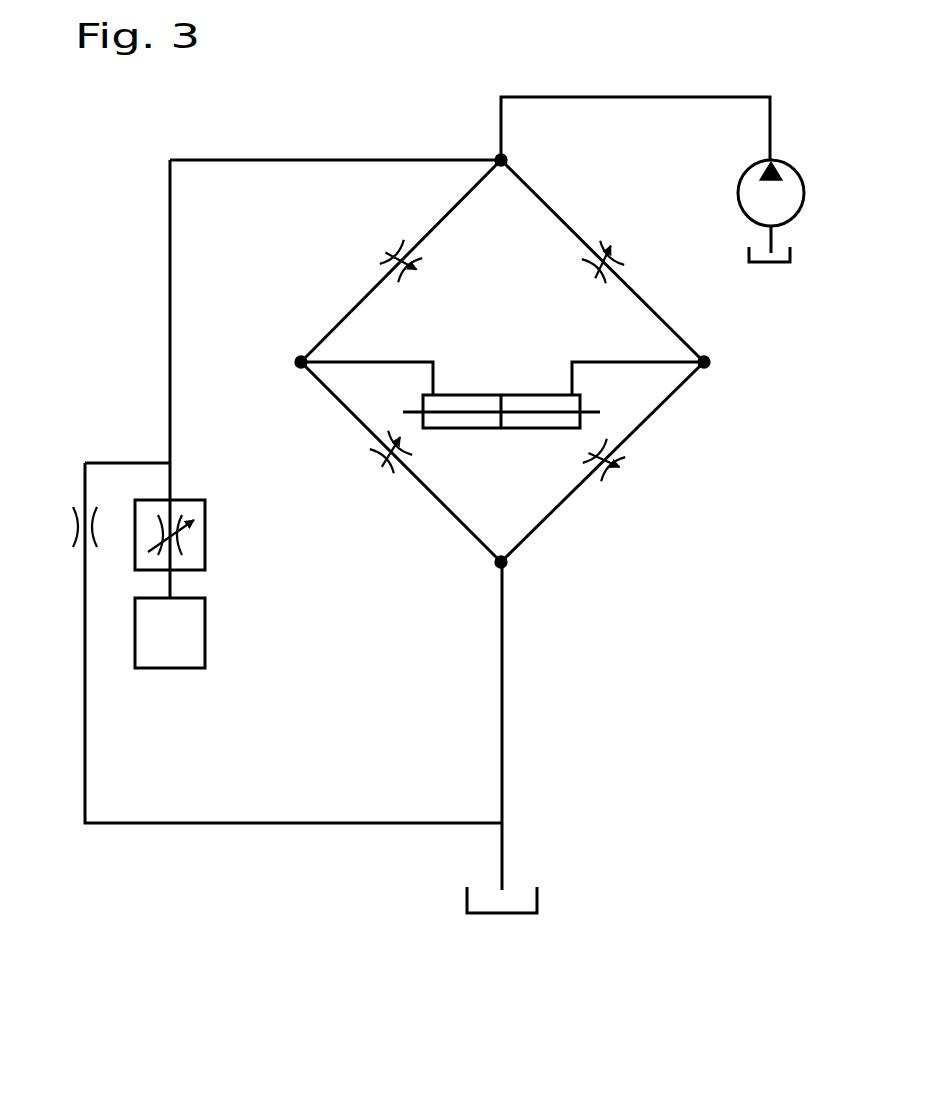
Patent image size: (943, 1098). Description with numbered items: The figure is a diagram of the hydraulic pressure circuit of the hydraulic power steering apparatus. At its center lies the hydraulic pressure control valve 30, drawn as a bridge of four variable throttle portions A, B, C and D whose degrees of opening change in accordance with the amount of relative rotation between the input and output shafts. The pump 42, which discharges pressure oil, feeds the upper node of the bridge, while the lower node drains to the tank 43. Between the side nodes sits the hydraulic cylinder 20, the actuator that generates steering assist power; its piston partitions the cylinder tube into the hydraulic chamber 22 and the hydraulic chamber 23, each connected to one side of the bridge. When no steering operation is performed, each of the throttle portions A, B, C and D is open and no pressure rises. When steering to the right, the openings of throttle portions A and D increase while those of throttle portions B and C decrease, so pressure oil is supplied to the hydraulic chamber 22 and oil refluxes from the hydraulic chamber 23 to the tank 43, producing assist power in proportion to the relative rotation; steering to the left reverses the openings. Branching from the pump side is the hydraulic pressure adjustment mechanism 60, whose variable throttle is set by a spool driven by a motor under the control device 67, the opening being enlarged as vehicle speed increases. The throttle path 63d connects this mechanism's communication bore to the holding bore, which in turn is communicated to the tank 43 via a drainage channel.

The hydraulic pressure control valve 30 is at (553, 204).
The hydraulic cylinder 20 is at (462, 395).
The hydraulic chamber 22 is at (540, 429).
The hydraulic chamber 23 is at (462, 429).
The pump 42 is at (790, 197).
The tank 43 is at (782, 268).
The hydraulic pressure adjustment mechanism 60 is at (185, 500).
The throttle path 63d is at (70, 546).
The control device 67 is at (178, 669).
The throttle portion A is at (615, 258).
The throttle portion B is at (608, 474).
The throttle portion C is at (394, 250).
The throttle portion D is at (383, 473).